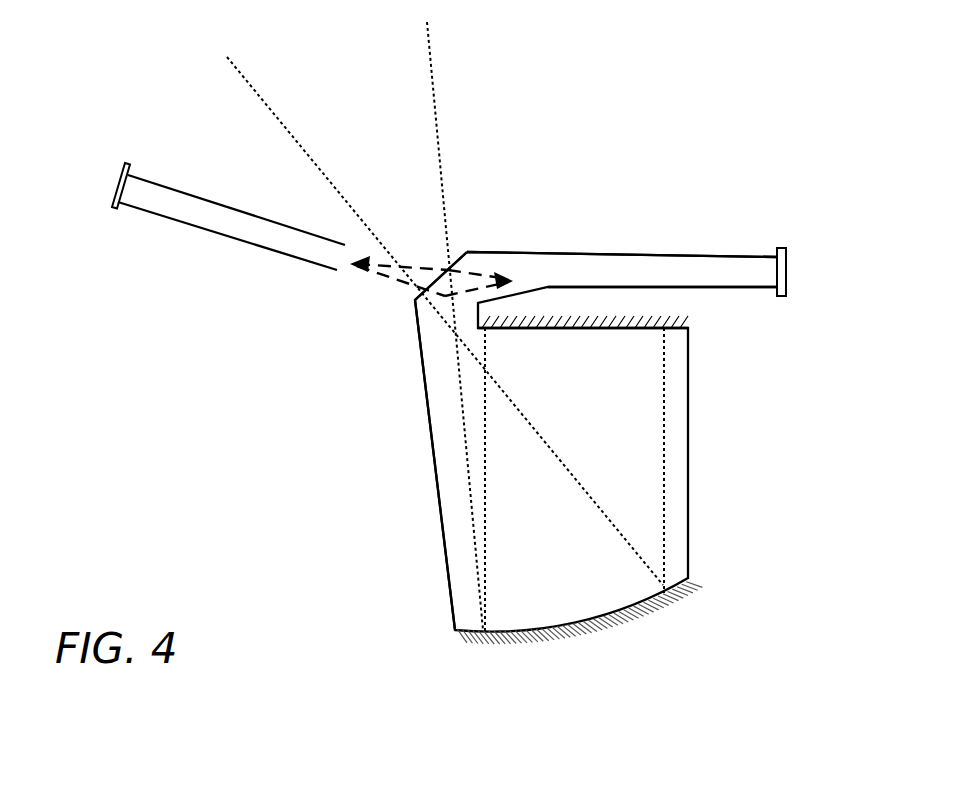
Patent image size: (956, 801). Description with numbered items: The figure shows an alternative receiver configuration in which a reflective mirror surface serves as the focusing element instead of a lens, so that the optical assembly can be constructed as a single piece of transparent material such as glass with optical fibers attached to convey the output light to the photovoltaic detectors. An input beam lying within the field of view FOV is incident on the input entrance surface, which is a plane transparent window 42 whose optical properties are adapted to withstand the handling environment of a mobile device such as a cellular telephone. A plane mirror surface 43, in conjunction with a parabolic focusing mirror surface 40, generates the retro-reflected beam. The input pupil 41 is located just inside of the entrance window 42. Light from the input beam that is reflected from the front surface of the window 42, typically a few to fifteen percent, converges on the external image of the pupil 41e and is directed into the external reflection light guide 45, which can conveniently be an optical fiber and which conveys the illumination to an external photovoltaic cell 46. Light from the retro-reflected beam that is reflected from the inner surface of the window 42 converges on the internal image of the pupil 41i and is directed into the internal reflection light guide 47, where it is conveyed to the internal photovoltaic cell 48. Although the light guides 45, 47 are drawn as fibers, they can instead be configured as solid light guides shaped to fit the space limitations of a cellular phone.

The parabolic focusing mirror surface 40 is at (617, 630).
The input pupil 41 is at (457, 340).
The external image of the pupil 41e is at (357, 272).
The internal image of the pupil 41i is at (508, 278).
The plane transparent window 42 is at (467, 252).
The plane mirror surface 43 is at (647, 328).
The external reflection light guide 45 is at (237, 238).
The external photovoltaic cell 46 is at (104, 210).
The internal reflection light guide 47 is at (685, 257).
The internal photovoltaic cell 48 is at (782, 248).
The field of view FOV is at (433, 95).